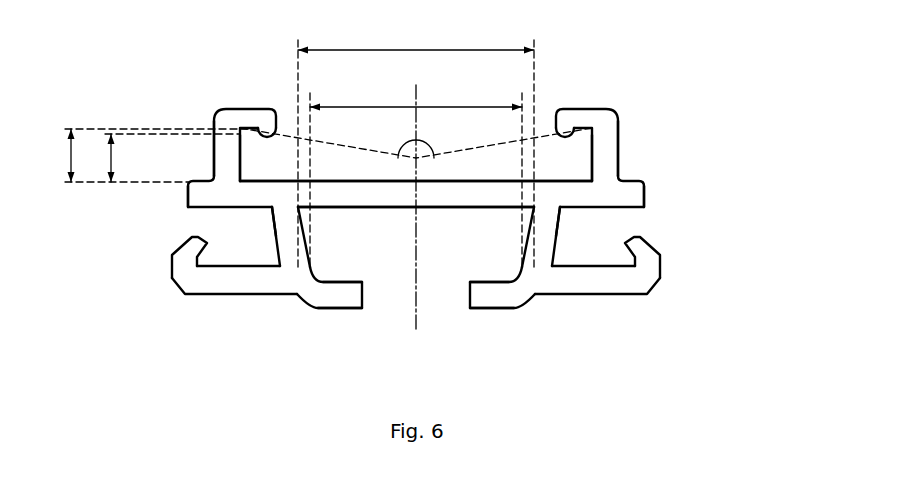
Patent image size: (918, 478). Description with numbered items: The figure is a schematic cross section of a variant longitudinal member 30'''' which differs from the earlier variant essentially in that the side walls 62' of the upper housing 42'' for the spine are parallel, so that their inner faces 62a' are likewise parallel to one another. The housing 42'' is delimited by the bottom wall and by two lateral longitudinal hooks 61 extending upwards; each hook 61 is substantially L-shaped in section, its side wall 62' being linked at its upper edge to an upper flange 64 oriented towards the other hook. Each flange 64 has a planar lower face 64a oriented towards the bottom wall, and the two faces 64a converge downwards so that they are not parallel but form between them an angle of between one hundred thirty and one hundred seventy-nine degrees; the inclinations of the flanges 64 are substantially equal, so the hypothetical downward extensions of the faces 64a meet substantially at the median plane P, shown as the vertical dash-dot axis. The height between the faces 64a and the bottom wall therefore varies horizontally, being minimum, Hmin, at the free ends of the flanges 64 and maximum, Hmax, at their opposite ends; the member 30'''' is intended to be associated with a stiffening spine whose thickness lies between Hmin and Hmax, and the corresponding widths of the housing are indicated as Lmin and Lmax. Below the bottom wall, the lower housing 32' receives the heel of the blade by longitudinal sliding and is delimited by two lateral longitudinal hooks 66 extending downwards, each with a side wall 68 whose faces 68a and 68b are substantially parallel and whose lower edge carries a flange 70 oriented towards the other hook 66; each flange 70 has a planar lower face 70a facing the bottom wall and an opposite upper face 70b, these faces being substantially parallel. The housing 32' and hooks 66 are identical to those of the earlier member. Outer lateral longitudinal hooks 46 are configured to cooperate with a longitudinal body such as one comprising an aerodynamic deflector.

The longitudinal member 30'''' is at (504, 156).
The housing 32' is at (416, 237).
The housing of the spine 42'' is at (416, 170).
The lateral longitudinal hooks 46 is at (215, 287).
The lateral longitudinal hooks 61 is at (195, 163).
The side walls 62' is at (419, 127).
The inner faces 62a' is at (416, 158).
The upper flange 64 is at (245, 122).
The planar lower face 64a is at (275, 127).
The lateral longitudinal hooks 66 is at (270, 243).
The side wall 68 is at (287, 243).
The face of side wall 68a is at (307, 245).
The face of side wall 68b is at (267, 233).
The upper flange 70 is at (325, 302).
The planar lower face 70a is at (344, 282).
The upper face 70b is at (340, 310).
The maximum height Hmax is at (69, 157).
The minimum height Hmin is at (102, 158).
The maximum width Lmax is at (390, 50).
The minimum width Lmin is at (345, 103).
The median plane P is at (417, 97).